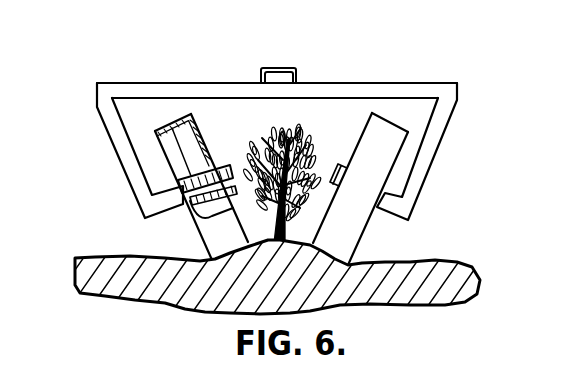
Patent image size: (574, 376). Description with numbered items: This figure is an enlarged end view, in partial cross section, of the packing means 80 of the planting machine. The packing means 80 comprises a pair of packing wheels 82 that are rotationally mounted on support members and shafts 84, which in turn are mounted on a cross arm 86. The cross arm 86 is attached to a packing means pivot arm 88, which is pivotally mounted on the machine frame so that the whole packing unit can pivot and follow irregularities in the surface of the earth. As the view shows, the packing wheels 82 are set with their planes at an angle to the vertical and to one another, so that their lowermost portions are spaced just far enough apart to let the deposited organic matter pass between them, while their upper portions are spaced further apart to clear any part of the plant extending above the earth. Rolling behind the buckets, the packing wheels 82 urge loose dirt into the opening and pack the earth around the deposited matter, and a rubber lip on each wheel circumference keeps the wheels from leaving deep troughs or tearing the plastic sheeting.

The packing means 80 is at (165, 74).
The packing wheels 82 is at (207, 143).
The support members and shafts 84 is at (122, 158).
The cross arm 86 is at (372, 83).
The packing means pivot arm 88 is at (280, 68).